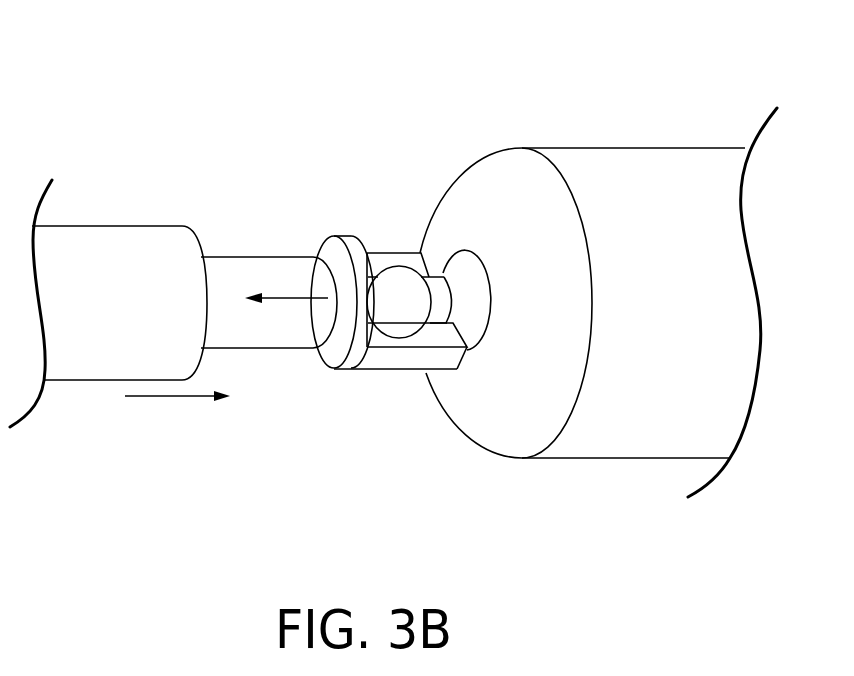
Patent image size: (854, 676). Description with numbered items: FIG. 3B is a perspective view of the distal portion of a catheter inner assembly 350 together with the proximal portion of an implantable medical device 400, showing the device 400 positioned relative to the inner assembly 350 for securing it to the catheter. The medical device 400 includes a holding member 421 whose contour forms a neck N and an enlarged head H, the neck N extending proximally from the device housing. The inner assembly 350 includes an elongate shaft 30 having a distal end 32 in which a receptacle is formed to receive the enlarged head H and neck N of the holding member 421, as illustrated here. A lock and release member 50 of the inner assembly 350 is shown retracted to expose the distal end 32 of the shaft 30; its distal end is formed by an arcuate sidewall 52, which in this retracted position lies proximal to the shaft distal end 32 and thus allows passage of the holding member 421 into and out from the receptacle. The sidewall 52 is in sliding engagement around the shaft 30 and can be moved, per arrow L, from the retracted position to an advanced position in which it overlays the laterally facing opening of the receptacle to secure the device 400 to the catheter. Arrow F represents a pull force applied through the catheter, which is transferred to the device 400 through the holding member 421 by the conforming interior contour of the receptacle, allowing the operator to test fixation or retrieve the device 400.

The catheter inner assembly 350 is at (202, 86).
The elongate shaft 30 is at (281, 190).
The lock and release member 50 is at (97, 225).
The arcuate sidewall 52 is at (167, 308).
The distal end of elongate shaft 32 is at (395, 357).
The enlarged head H is at (392, 277).
The neck N is at (437, 317).
The holding member 421 is at (394, 135).
The medical device 400 is at (605, 80).
The arrow representing pull force F is at (308, 289).
The arrow indicating sidewall movement L is at (195, 426).